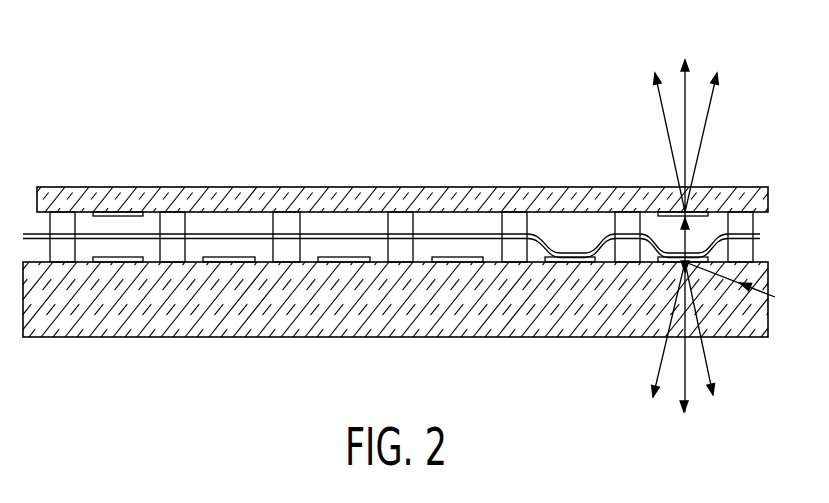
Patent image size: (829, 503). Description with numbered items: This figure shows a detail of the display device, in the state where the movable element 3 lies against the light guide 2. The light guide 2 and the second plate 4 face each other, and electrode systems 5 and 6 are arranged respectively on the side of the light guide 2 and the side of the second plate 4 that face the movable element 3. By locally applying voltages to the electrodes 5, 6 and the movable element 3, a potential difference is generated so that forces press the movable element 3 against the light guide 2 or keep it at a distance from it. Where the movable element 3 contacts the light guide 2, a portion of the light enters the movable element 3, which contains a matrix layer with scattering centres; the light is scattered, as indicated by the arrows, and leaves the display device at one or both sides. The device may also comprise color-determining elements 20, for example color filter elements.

The light guide 2 is at (112, 323).
The movable element 3 is at (738, 205).
The second plate 4 is at (248, 197).
The electrode system 5 is at (569, 263).
The electrode system 6 is at (118, 211).
The color-determining elements 20 is at (662, 205).